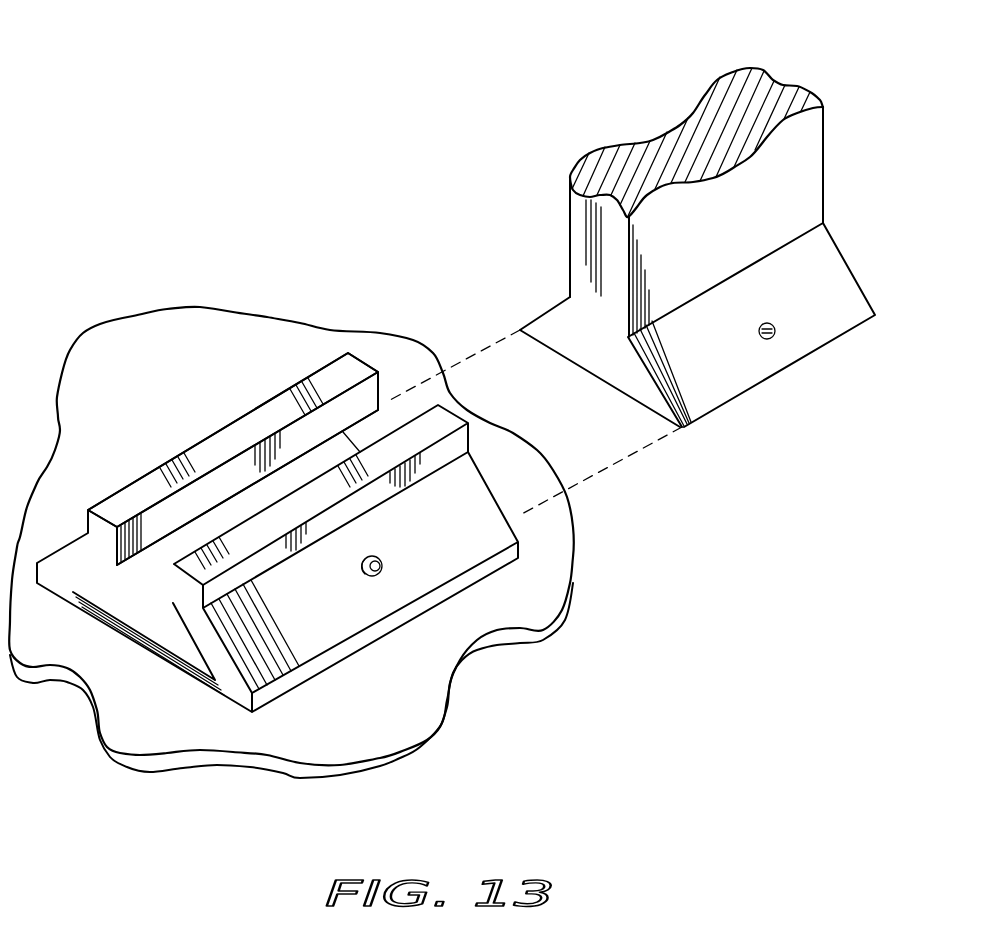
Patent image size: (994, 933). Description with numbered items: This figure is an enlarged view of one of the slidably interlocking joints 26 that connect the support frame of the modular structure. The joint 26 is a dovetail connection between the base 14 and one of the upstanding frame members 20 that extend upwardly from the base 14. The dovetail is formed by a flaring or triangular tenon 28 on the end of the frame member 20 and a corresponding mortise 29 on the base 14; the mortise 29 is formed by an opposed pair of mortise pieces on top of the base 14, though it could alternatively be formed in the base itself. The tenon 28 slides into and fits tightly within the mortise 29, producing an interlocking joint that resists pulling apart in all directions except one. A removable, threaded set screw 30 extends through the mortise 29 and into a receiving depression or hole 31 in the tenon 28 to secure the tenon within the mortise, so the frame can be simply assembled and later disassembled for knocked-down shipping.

The base 14 is at (135, 725).
The upstanding frame member 20 is at (682, 218).
The slidably interlocking joint 26 is at (277, 400).
The tenon 28 is at (567, 337).
The mortise 29 is at (160, 568).
The set screw 30 is at (385, 570).
The receiving hole 31 is at (757, 330).